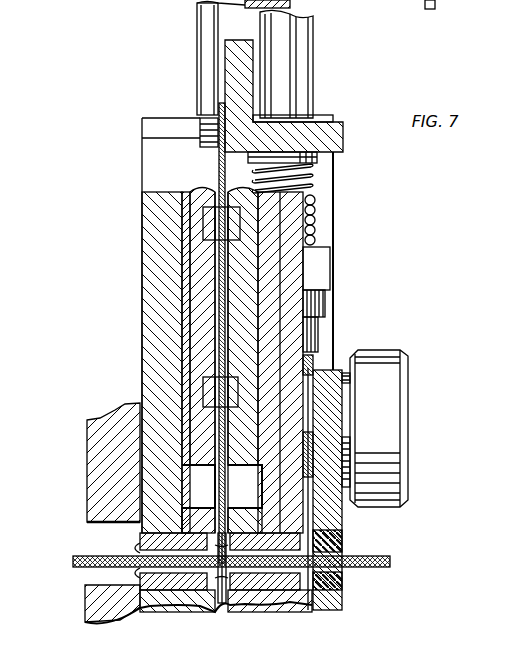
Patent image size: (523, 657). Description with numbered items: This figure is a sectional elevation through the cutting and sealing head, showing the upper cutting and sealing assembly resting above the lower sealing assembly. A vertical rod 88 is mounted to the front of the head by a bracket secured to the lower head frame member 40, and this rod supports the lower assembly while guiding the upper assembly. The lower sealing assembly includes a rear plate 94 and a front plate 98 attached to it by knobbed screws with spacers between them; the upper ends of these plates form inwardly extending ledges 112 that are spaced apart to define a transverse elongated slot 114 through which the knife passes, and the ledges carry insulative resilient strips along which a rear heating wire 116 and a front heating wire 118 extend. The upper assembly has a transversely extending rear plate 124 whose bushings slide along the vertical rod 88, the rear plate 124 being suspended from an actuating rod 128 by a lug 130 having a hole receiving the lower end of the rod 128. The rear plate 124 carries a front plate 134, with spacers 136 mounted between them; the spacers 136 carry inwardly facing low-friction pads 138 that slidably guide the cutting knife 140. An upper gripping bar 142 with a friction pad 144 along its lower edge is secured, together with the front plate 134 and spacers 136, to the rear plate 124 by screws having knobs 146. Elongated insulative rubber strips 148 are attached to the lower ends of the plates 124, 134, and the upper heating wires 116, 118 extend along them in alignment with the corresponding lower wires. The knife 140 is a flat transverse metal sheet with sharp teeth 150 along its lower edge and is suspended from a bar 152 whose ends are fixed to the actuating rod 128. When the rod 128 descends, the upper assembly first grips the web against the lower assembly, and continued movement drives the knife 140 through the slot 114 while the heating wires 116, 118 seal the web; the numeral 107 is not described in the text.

The lower head frame member 40 is at (93, 0).
The connecting member 107 is at (45, 4).
The teeth 150 is at (135, 4).
The vertical rods 88 is at (197, 42).
The bar 152 is at (240, 79).
The actuating rods 128 is at (305, 66).
The front plate 134 is at (303, 235).
The lugs 130 is at (320, 270).
The upper gripping bar 142 is at (337, 368).
The knobs 146 is at (390, 388).
The rear plate 124 is at (145, 313).
The spacers 136 is at (245, 272).
The cutting knife 140 is at (222, 345).
The pads 138 is at (215, 222).
The rear electrical resistance heating wire 116 is at (150, 517).
The insulative rubber strips 148 is at (135, 540).
The friction pad 144 is at (355, 550).
The front electrical resistance heating wire 118 is at (300, 530).
The transverse elongated slot 114 is at (222, 605).
The rear plate 94 is at (135, 616).
The front plate 98 is at (295, 610).
The ledges 112 is at (258, 606).